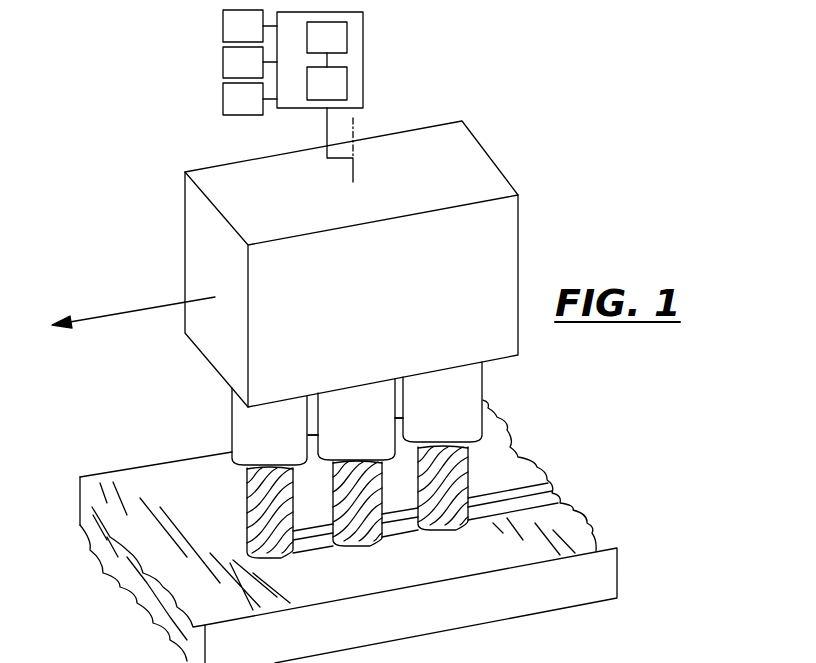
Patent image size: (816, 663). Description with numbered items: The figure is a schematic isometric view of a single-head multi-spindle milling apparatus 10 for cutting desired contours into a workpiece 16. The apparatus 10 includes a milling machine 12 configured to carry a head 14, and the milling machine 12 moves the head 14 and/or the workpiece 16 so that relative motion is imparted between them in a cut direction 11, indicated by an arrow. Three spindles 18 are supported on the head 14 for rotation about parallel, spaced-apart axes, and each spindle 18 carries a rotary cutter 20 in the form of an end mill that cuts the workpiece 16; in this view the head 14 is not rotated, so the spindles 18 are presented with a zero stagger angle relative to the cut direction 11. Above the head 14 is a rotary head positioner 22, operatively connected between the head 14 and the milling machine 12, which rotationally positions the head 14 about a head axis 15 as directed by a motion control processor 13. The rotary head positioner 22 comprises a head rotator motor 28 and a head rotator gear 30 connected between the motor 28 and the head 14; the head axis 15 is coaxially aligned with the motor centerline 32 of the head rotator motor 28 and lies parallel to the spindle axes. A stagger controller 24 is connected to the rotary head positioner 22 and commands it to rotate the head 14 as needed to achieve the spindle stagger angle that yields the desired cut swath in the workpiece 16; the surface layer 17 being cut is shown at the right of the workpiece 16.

The milling apparatus 10 is at (376, 240).
The cut direction 11 is at (100, 317).
The milling machine 12 is at (250, 62).
The motion control processor 13 is at (250, 99).
The head 14 is at (498, 262).
The head axis 15 is at (357, 128).
The workpiece 16 is at (610, 572).
The workpiece surface layer 17 is at (585, 537).
The spindles 18 is at (243, 427).
The rotary cutters 20 is at (273, 530).
The rotary head positioner 22 is at (341, 60).
The stagger controller 24 is at (250, 26).
The head rotator motor 28 is at (327, 37).
The head rotator gear 30 is at (327, 83).
The motor centerline 32 is at (395, 120).